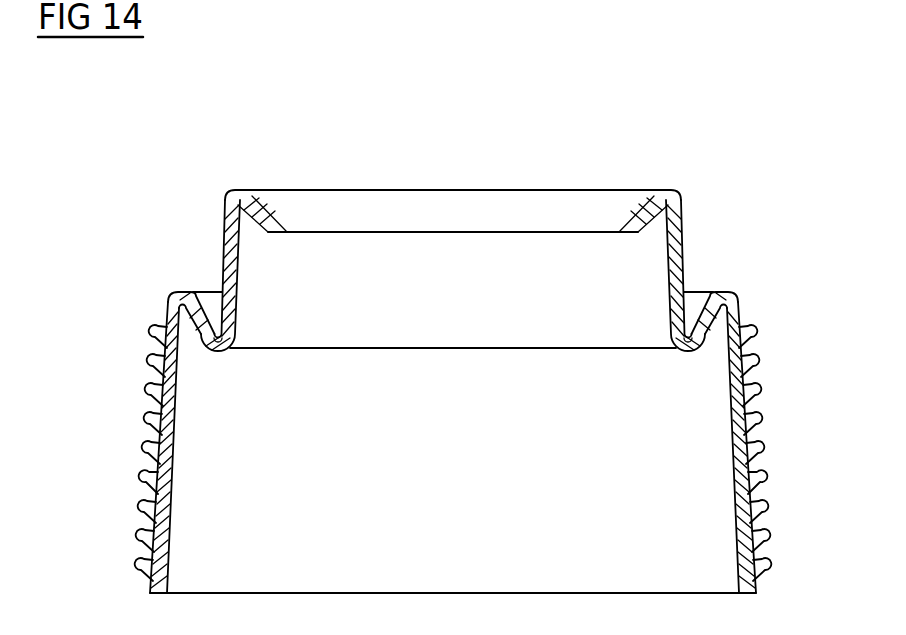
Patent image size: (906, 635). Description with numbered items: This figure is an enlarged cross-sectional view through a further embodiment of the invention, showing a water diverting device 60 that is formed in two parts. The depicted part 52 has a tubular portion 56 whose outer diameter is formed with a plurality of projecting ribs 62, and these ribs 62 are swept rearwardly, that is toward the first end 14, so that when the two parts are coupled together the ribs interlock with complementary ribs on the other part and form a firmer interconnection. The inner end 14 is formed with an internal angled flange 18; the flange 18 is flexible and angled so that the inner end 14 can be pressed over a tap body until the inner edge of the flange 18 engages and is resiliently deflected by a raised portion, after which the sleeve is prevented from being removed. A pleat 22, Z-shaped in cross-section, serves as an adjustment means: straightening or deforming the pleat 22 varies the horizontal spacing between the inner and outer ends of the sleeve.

The inner end 14 is at (522, 150).
The internal angled flange 18 is at (363, 210).
The pleat 22 is at (225, 347).
The part 52 is at (118, 278).
The tubular portion 56 is at (149, 460).
The water diverting device 60 is at (140, 178).
The projecting ribs 62 is at (758, 476).